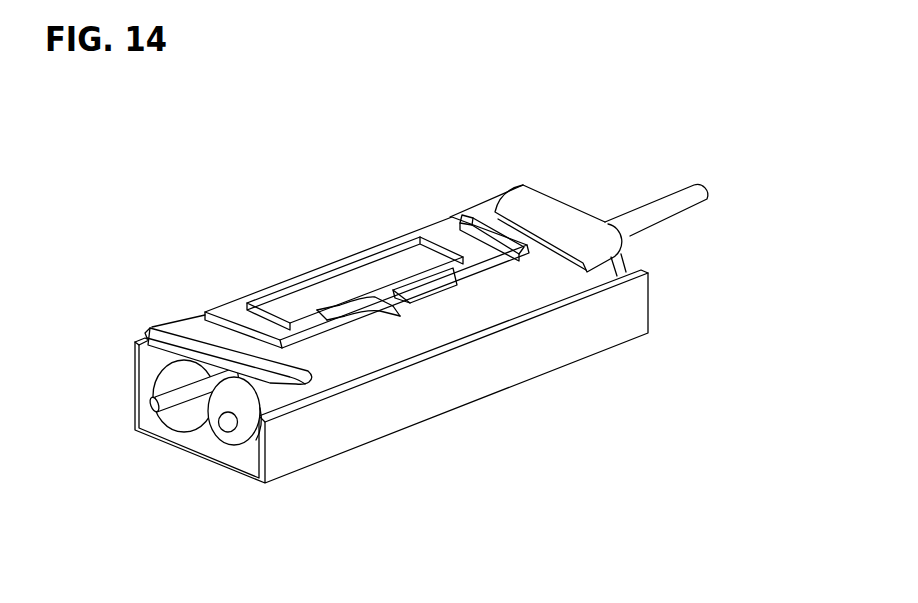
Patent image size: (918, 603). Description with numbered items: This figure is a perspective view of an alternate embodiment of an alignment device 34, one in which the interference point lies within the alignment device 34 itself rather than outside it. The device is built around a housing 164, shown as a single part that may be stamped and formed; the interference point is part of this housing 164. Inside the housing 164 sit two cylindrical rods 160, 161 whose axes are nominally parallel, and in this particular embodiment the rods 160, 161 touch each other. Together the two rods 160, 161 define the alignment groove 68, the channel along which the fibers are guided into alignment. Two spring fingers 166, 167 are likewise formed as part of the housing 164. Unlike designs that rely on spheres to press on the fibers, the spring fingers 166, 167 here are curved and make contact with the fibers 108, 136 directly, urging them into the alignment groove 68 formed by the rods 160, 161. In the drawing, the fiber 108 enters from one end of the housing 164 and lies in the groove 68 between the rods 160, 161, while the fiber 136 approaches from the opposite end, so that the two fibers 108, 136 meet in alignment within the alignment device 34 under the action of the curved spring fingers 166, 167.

The alignment device 34 is at (225, 288).
The alignment groove 68 is at (202, 412).
The fiber 108 is at (175, 400).
The fiber 136 is at (653, 210).
The cylindrical rod 160 is at (252, 433).
The cylindrical rod 161 is at (173, 382).
The housing 164 is at (635, 315).
The spring finger 166 is at (352, 315).
The spring finger 167 is at (420, 287).